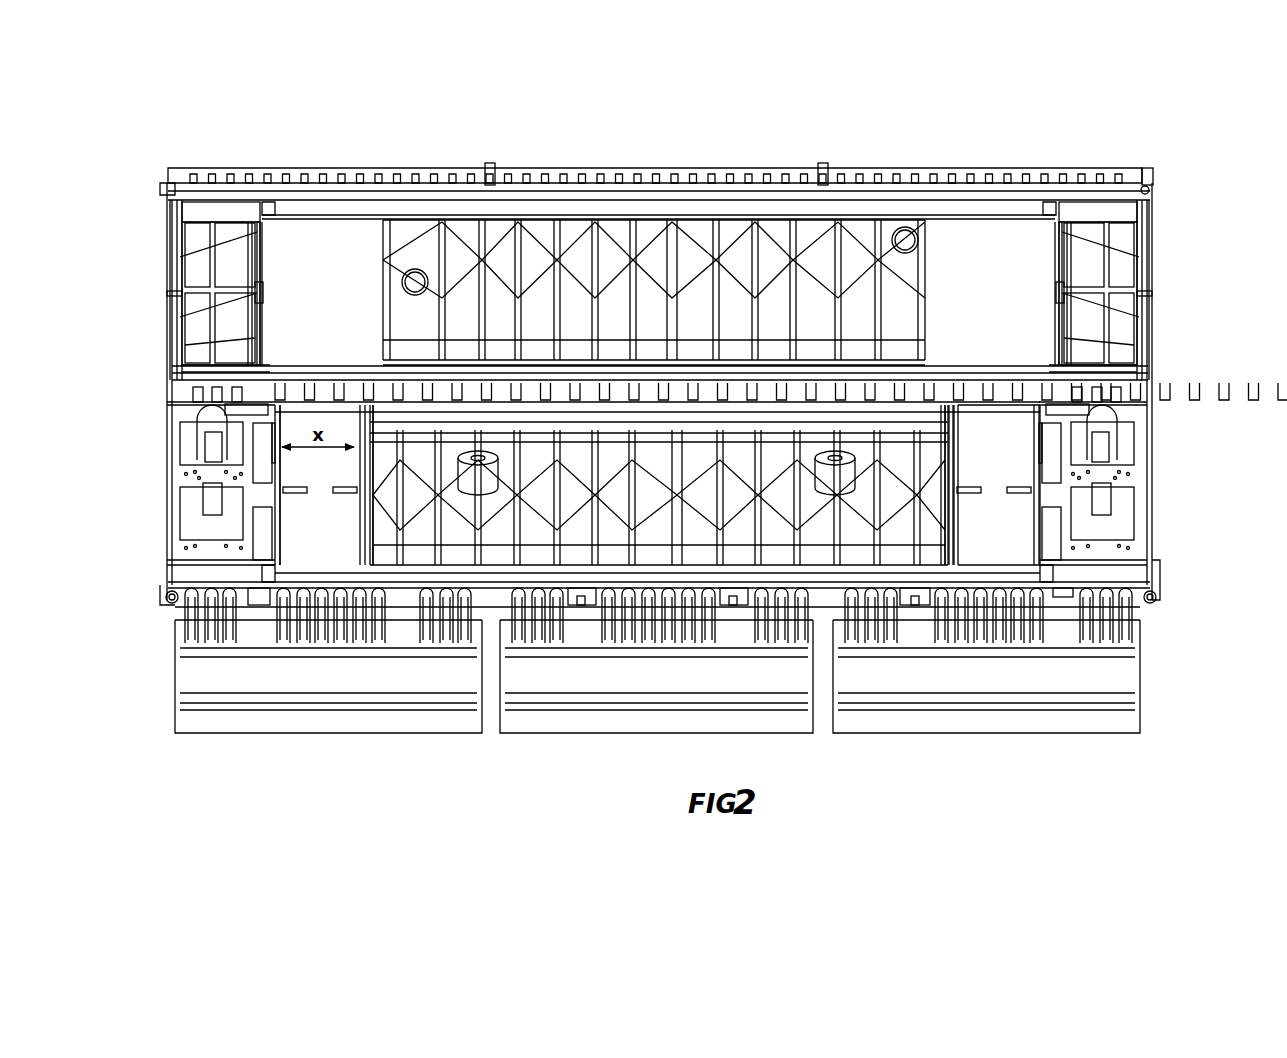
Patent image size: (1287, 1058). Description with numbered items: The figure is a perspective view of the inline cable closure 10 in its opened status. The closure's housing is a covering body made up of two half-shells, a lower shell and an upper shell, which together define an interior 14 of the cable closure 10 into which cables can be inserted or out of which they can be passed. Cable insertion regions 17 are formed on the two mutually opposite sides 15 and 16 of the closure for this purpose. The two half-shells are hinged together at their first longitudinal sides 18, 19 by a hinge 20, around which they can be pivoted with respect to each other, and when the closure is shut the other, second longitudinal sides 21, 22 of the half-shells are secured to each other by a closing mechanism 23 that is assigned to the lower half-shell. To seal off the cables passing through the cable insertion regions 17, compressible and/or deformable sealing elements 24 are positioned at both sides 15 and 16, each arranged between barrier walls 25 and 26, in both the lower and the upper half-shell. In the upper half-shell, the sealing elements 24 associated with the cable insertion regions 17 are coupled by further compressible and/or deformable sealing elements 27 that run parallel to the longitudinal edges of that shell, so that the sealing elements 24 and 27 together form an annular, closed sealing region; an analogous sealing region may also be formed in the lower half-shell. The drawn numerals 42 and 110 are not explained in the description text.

The inline cable closure 10 is at (983, 160).
The interior 14 is at (890, 354).
The side 15 is at (168, 165).
The side 16 is at (1148, 165).
The cable insertion regions 17 is at (177, 238).
The first longitudinal side 18 is at (340, 376).
The first longitudinal side 19 is at (992, 408).
The hinge 20 is at (465, 391).
The second longitudinal side 21 is at (1157, 600).
The second longitudinal side 22 is at (378, 202).
The closing mechanism 23 is at (865, 680).
The sealing elements 24 is at (321, 250).
The barrier wall 25 is at (263, 200).
The barrier wall 26 is at (395, 211).
The sealing elements 27 is at (713, 372).
The lower lattice 42 is at (678, 583).
The housing bottom 110 is at (155, 727).